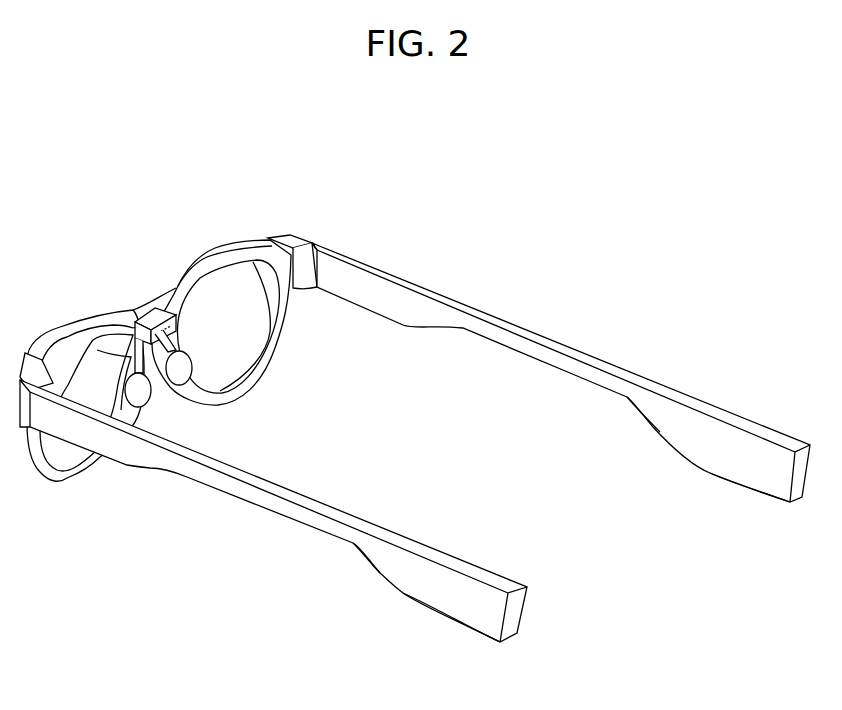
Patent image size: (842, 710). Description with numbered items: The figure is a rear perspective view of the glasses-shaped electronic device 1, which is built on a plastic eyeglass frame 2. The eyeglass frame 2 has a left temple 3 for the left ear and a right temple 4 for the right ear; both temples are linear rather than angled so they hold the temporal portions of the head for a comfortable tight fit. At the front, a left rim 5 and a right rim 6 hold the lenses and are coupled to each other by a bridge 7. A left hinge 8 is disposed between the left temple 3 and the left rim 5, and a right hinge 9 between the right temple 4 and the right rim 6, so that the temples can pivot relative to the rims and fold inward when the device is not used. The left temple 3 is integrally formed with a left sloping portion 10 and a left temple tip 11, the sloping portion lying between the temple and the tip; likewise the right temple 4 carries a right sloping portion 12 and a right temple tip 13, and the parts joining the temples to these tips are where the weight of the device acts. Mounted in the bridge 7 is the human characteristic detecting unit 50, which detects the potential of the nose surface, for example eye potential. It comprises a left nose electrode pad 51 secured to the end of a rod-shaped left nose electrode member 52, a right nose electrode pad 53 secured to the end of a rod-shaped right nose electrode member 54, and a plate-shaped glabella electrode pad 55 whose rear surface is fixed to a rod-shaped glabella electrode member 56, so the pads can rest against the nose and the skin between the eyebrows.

The glasses-shaped electronic device 1 is at (415, 427).
The eyeglass frame 2 is at (187, 359).
The left temple 3 is at (273, 533).
The right temple 4 is at (561, 372).
The left rim 5 is at (68, 322).
The right rim 6 is at (238, 247).
The bridge 7 is at (123, 306).
The left hinge 8 is at (25, 365).
The right hinge 9 is at (300, 240).
The left sloping portion 10 is at (382, 574).
The left temple tip 11 is at (442, 594).
The right sloping portion 12 is at (667, 384).
The right temple tip 13 is at (738, 423).
The human characteristic detecting unit 50 is at (218, 319).
The left nose electrode pad 51 is at (140, 392).
The left nose electrode member 52 is at (115, 337).
The right nose electrode pad 53 is at (181, 368).
The right nose electrode member 54 is at (178, 340).
The glabella electrode pad 55 is at (170, 311).
The glabella electrode member 56 is at (176, 323).